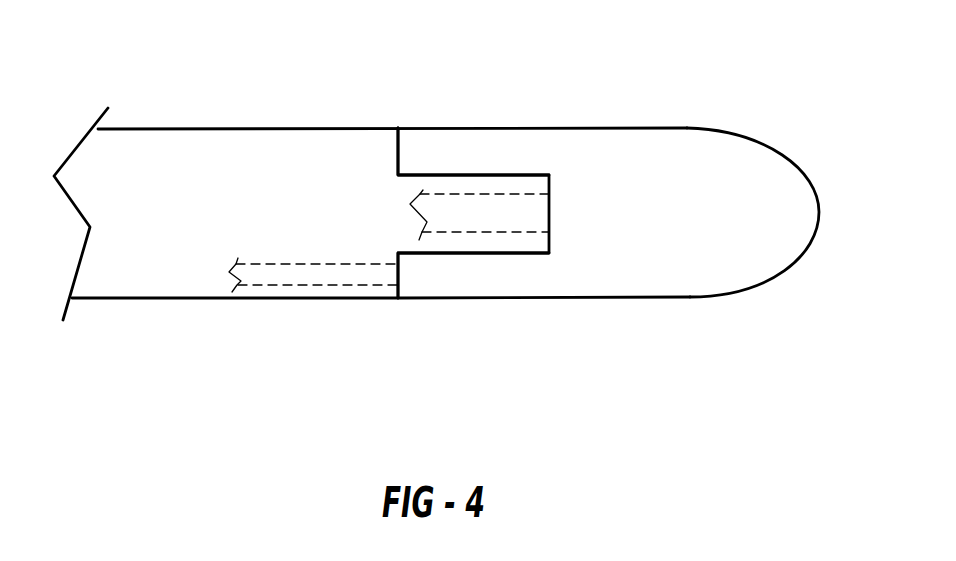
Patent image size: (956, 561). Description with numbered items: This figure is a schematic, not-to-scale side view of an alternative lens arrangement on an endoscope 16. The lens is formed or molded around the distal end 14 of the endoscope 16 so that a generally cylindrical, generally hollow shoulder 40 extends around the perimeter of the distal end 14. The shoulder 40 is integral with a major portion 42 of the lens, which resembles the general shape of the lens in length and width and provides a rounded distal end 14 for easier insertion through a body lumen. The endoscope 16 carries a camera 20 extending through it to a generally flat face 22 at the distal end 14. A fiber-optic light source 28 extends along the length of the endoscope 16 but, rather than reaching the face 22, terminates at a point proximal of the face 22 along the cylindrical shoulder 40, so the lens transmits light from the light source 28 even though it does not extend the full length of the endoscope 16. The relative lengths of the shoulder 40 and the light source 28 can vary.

The endoscope 16 is at (270, 128).
The distal end 14 is at (453, 182).
The camera 20 is at (509, 193).
The face 22 is at (549, 186).
The light source 28 is at (339, 279).
The shoulder 40 is at (469, 272).
The major portion 42 is at (708, 257).